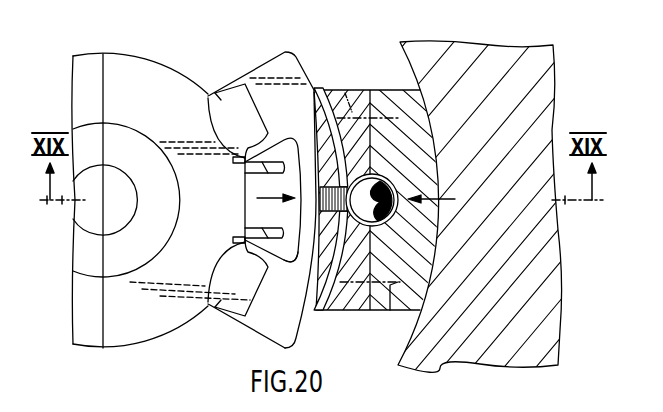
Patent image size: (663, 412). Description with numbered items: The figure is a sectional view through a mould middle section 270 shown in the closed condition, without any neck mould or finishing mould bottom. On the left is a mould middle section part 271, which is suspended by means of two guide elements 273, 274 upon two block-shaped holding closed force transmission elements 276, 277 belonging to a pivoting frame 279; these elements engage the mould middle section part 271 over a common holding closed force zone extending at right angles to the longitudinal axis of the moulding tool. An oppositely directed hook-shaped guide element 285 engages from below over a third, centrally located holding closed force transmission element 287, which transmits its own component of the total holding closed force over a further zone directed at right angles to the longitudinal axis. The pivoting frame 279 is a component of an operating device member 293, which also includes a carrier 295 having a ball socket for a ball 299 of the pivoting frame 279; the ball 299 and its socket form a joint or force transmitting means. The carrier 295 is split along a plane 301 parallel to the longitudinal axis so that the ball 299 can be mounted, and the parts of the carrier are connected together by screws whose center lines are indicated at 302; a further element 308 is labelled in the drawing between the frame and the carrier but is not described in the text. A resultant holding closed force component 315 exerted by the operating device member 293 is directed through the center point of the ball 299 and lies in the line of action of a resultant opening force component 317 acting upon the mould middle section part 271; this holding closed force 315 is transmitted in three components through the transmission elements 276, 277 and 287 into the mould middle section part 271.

The mould middle section 270 is at (161, 182).
The mould middle section part 271 is at (131, 54).
The guide element 273 is at (257, 193).
The guide element 274 is at (242, 107).
The holding closed force transmission element 276 is at (250, 268).
The holding closed force transmission element 277 is at (243, 152).
The pivoting frame 279 is at (299, 60).
The hook-shaped guide element 285 is at (275, 167).
The third holding closed force transmission element 287 is at (295, 260).
The operating device member 293 is at (477, 40).
The carrier 295 is at (334, 84).
The ball 299 is at (375, 189).
The plane 301 is at (329, 190).
The screw center lines 302 is at (348, 90).
The pawl 308 is at (256, 206).
The resultant holding closed force component 315 is at (437, 201).
The resultant opening force component 317 is at (275, 189).